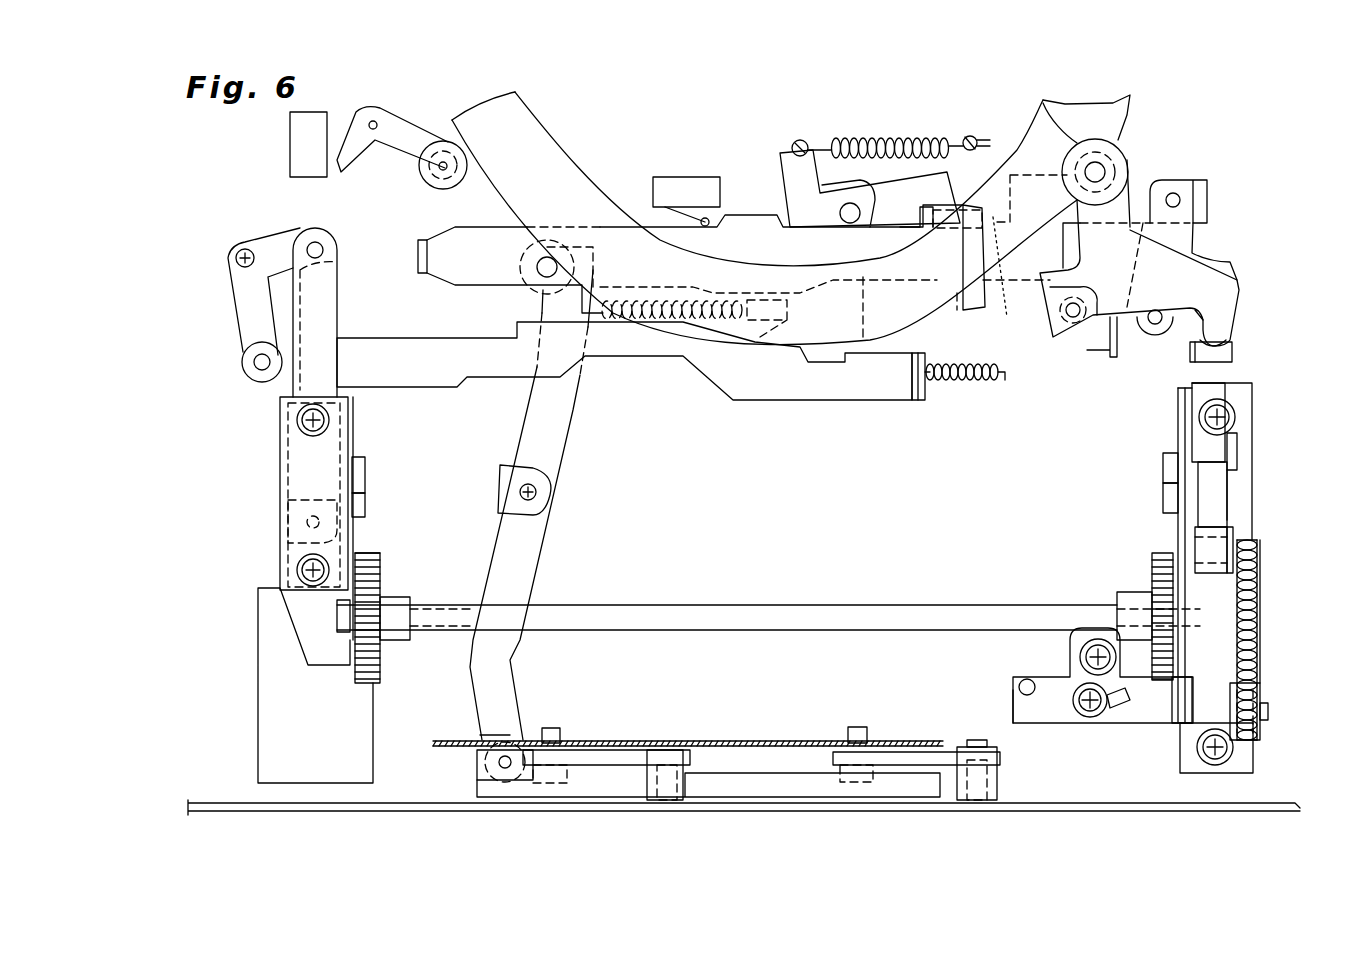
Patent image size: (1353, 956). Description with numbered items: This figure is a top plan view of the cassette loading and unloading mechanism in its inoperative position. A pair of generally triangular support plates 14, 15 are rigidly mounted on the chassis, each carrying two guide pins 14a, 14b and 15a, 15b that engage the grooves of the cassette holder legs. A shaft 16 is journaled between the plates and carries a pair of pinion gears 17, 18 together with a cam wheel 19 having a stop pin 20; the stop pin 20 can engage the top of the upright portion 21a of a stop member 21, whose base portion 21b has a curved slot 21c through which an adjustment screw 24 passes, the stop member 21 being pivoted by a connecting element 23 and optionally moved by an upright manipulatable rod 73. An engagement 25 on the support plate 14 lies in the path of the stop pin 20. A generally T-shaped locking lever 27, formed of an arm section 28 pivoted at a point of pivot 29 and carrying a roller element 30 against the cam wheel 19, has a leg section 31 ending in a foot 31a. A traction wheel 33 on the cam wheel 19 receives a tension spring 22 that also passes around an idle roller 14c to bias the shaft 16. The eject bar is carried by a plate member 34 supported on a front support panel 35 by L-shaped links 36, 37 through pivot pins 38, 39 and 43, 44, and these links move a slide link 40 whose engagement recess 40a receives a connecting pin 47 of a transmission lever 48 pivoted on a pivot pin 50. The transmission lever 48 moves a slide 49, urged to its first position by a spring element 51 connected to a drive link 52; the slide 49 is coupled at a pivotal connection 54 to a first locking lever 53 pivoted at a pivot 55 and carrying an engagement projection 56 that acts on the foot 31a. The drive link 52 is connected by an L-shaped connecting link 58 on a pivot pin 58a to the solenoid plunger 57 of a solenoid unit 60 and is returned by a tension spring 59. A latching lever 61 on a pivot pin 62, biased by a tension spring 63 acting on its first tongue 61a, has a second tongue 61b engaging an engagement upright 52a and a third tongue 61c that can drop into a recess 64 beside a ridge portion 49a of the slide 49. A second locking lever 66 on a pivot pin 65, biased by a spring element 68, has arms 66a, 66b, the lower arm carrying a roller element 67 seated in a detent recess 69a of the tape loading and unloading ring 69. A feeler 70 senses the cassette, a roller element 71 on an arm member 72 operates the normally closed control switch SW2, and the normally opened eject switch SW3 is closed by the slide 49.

The support plate 14 is at (1167, 450).
The guide pin 14a is at (1167, 473).
The guide pin 14b is at (1167, 500).
The idle roller 14c is at (1257, 727).
The support plate 15 is at (347, 412).
The guide pin 15a is at (367, 470).
The guide pin 15b is at (360, 503).
The shaft 16 is at (788, 617).
The pinion gear 17 is at (1157, 567).
The pinion gear 18 is at (373, 567).
The cam wheel 19 is at (1220, 583).
The stop pin 20 is at (1193, 587).
The stop member 21 is at (1055, 718).
The upright portion 21a is at (1177, 730).
The base portion 21b is at (1048, 685).
The curved slot 21c is at (1117, 710).
The tension spring 22 is at (1243, 637).
The connecting element 23 is at (1090, 640).
The adjustment screw 24 is at (1087, 710).
The engagement 25 is at (1237, 660).
The locking lever 27 is at (1244, 489).
The arm section 28 is at (1207, 500).
The point of pivot 29 is at (1237, 450).
The roller element 30 is at (1207, 547).
The leg section 31 is at (1223, 370).
The foot 31a is at (1230, 353).
The traction wheel 33 is at (1260, 613).
The plate member 34 is at (767, 743).
The front support panel 35 is at (233, 803).
The L-shaped link 36 is at (907, 760).
The L-shaped link 37 is at (587, 757).
The pivot pin 38 is at (857, 727).
The pivot pin 39 is at (550, 728).
The slide link 40 is at (713, 783).
The engagement recess 40a is at (502, 738).
The pivot pin 43 is at (973, 743).
The pivot pin 44 is at (667, 747).
The connecting pin 47 is at (487, 763).
The transmission lever 48 is at (537, 540).
The slide 49 is at (473, 273).
The ridge portion 49a is at (983, 203).
The pivot pin 50 is at (547, 487).
The spring element 51 is at (633, 320).
The drive link 52 is at (777, 390).
The engagement upright 52a is at (857, 350).
The first locking lever 53 is at (1210, 260).
The pivotal connection 54 is at (1182, 197).
The pivot 55 is at (1155, 347).
The engagement projection 56 is at (1220, 337).
The solenoid plunger 57 is at (327, 300).
The connecting link 58 is at (242, 300).
The pivot pin 58a is at (243, 252).
The tension spring 59 is at (957, 383).
The solenoid unit 60 is at (280, 717).
The latching lever 61 is at (897, 193).
The first tongue 61a is at (800, 140).
The second tongue 61b is at (877, 353).
The third tongue 61c is at (950, 150).
The pivot pin 62 is at (847, 213).
The tension spring 63 is at (833, 160).
The recess 64 is at (995, 274).
The pivot pin 65 is at (1050, 335).
The second locking lever 66 is at (1113, 257).
The arm 66a is at (1220, 300).
The arm 66b is at (1107, 183).
The roller element 67 is at (1130, 103).
The spring element 68 is at (1097, 350).
The tape loading and unloading ring 69 is at (537, 160).
The detent recess 69a is at (1047, 120).
The feeler 70 is at (1180, 417).
The roller element 71 is at (420, 170).
The arm member 72 is at (398, 125).
The upright manipulatable rod 73 is at (1022, 680).
The control switch SW2 is at (295, 157).
The eject switch SW3 is at (673, 180).